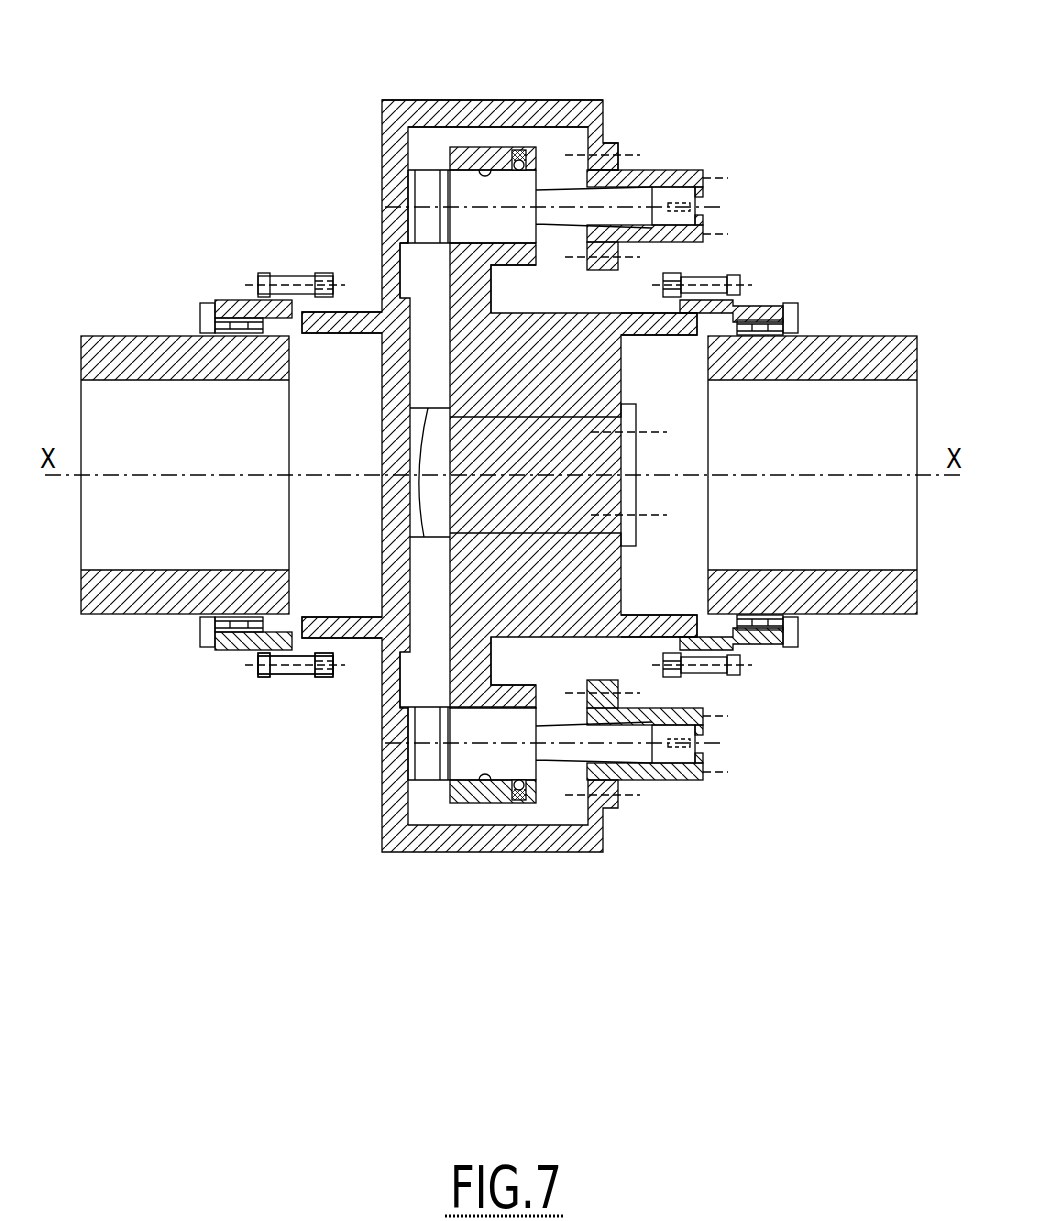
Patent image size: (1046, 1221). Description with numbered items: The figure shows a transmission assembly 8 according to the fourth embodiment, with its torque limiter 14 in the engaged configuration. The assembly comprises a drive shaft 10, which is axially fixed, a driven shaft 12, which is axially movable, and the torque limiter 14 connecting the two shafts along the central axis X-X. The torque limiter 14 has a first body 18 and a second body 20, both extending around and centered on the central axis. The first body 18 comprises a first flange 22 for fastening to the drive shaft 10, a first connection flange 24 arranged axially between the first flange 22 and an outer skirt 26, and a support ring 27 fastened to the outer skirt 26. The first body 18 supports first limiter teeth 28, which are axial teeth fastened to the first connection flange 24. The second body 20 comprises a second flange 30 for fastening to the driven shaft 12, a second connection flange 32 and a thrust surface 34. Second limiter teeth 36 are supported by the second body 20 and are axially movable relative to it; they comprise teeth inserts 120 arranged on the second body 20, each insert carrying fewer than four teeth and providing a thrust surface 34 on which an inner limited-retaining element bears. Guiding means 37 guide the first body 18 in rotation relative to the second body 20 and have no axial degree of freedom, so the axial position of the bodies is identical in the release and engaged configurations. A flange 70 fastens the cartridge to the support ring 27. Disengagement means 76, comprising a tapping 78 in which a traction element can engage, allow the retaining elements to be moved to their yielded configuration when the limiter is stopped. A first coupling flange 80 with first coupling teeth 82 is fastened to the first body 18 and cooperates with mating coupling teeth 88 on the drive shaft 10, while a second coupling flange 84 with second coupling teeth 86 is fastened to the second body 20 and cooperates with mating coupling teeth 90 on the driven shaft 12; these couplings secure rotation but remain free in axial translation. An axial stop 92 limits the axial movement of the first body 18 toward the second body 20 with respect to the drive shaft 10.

The transmission assembly 8 is at (307, 898).
The drive shaft 10 is at (134, 600).
The driven shaft 12 is at (890, 600).
The torque limiter 14 is at (313, 813).
The first body 18 is at (382, 242).
The second body 20 is at (601, 303).
The first flange 22 is at (336, 336).
The first connection flange 24 is at (395, 140).
The outer skirt 26 is at (474, 115).
The support ring 27 is at (606, 116).
The first limiter teeth 28 is at (408, 188).
The second flange 30 is at (658, 328).
The second connection flange 32 is at (485, 278).
The thrust surface 34 is at (538, 180).
The second limiter teeth 36 is at (426, 180).
The guiding means 37 is at (530, 419).
The flange 70 is at (612, 812).
The disengagement means 76 is at (706, 751).
The tapping 78 is at (698, 742).
The first coupling flange 80 is at (246, 305).
The first coupling teeth 82 is at (241, 651).
The second coupling flange 84 is at (754, 650).
The second coupling teeth 86 is at (776, 648).
The mating coupling teeth 88 is at (231, 614).
The mating coupling teeth 90 is at (760, 614).
The axial stop 92 is at (207, 304).
The teeth inserts 120 is at (498, 170).